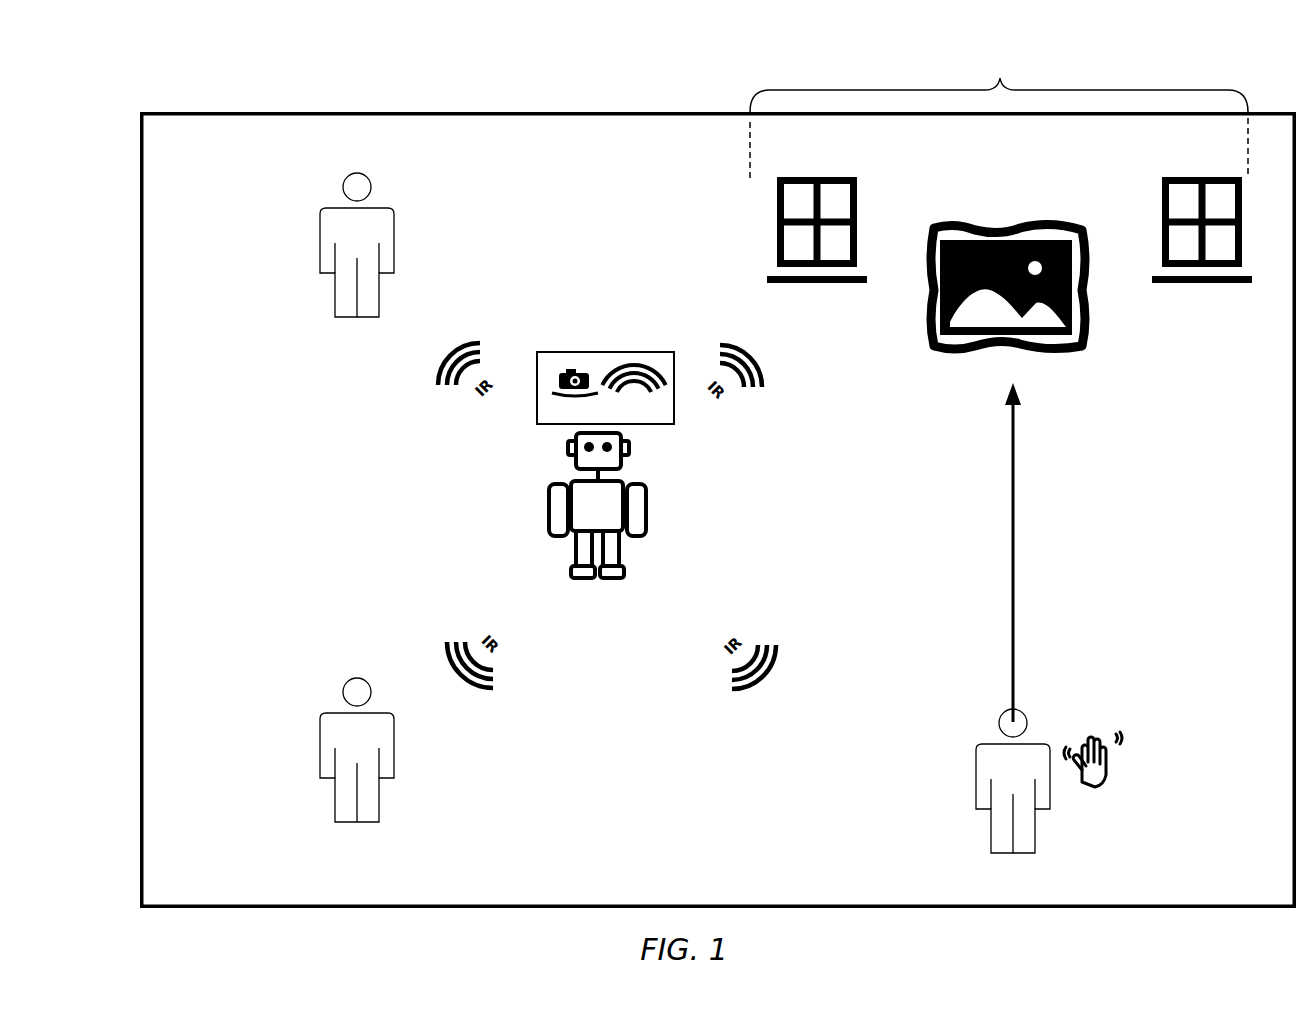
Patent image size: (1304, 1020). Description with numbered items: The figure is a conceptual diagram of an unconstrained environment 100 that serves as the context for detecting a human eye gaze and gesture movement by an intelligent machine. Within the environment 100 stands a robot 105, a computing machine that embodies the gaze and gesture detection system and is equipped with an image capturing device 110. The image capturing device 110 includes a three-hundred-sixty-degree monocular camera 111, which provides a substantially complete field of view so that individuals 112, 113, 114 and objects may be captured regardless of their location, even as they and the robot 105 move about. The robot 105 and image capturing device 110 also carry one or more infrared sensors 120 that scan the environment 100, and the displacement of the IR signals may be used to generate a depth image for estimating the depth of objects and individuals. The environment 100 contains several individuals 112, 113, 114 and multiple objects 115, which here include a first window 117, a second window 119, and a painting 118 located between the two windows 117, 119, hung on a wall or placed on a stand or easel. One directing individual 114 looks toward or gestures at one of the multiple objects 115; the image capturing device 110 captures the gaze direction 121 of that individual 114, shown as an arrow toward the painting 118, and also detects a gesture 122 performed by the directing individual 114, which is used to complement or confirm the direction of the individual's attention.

The unconstrained environment 100 is at (227, 96).
The robot 105 is at (548, 525).
The image capturing device 110 is at (608, 373).
The 360-degree monocular camera 111 is at (565, 372).
The individual 112 is at (342, 232).
The individual 113 is at (342, 738).
The directing individual 114 is at (1002, 772).
The multiple objects 115 is at (970, 200).
The first window 117 is at (777, 225).
The painting 118 is at (962, 227).
The second window 119 is at (1153, 210).
The infrared sensors 120 is at (652, 383).
The gaze direction 121 is at (1015, 500).
The gesture 122 is at (1120, 758).